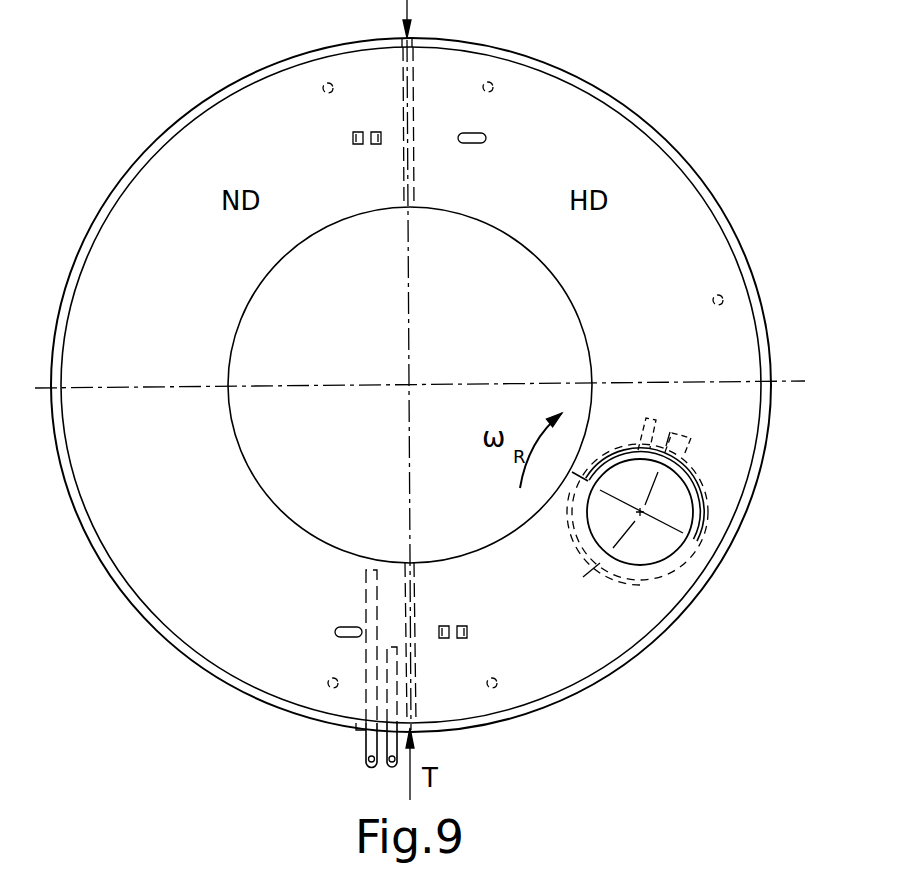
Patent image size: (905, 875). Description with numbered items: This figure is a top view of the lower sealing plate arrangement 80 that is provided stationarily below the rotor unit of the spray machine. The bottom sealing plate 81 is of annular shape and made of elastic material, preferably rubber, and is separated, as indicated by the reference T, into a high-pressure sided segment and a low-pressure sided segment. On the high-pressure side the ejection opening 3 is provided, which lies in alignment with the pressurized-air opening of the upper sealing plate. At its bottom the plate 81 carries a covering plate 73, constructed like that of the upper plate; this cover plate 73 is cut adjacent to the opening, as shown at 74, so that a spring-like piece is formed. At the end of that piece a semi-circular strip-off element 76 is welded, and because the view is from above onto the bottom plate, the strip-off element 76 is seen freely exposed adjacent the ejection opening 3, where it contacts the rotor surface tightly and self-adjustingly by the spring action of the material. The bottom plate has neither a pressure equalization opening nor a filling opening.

The rotor disk assembly 80 is at (707, 166).
The bottom sealing plate 81 is at (170, 590).
The cover plate 73 is at (192, 657).
The cut 74 is at (647, 418).
The strip-off element 76 is at (700, 517).
The ejection opening 3 is at (645, 543).